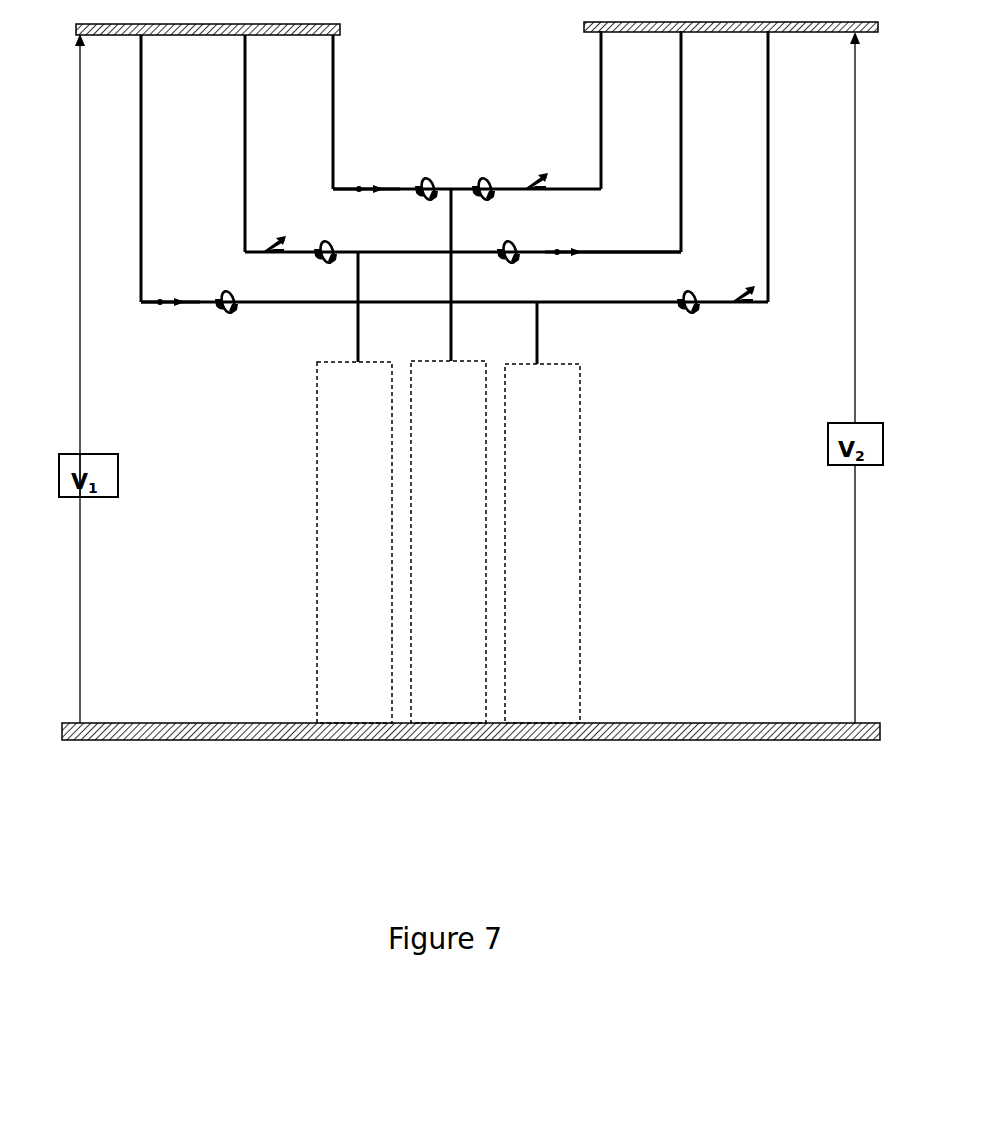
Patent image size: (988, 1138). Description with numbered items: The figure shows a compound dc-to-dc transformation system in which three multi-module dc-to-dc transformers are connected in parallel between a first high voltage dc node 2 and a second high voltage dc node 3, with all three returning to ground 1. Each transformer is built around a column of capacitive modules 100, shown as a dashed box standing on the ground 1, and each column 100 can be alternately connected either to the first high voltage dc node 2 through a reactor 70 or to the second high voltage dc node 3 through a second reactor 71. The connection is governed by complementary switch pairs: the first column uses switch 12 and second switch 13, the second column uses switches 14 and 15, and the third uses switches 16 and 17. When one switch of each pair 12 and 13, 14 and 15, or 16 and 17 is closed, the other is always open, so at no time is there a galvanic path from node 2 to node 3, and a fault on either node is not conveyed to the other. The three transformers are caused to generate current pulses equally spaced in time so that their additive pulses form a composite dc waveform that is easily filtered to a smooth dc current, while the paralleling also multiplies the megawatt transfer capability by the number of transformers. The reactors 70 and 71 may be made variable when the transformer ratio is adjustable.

The ground 1 is at (286, 742).
The first high voltage dc node 2 is at (216, 22).
The second high voltage dc node 3 is at (710, 20).
The switch 12 is at (369, 188).
The second switch 13 is at (541, 175).
The switch 14 is at (267, 240).
The switch 15 is at (573, 246).
The switch 16 is at (163, 298).
The switch 17 is at (736, 290).
The reactor 70 is at (434, 178).
The second reactor 71 is at (492, 178).
The column of capacitive modules 100 is at (367, 362).